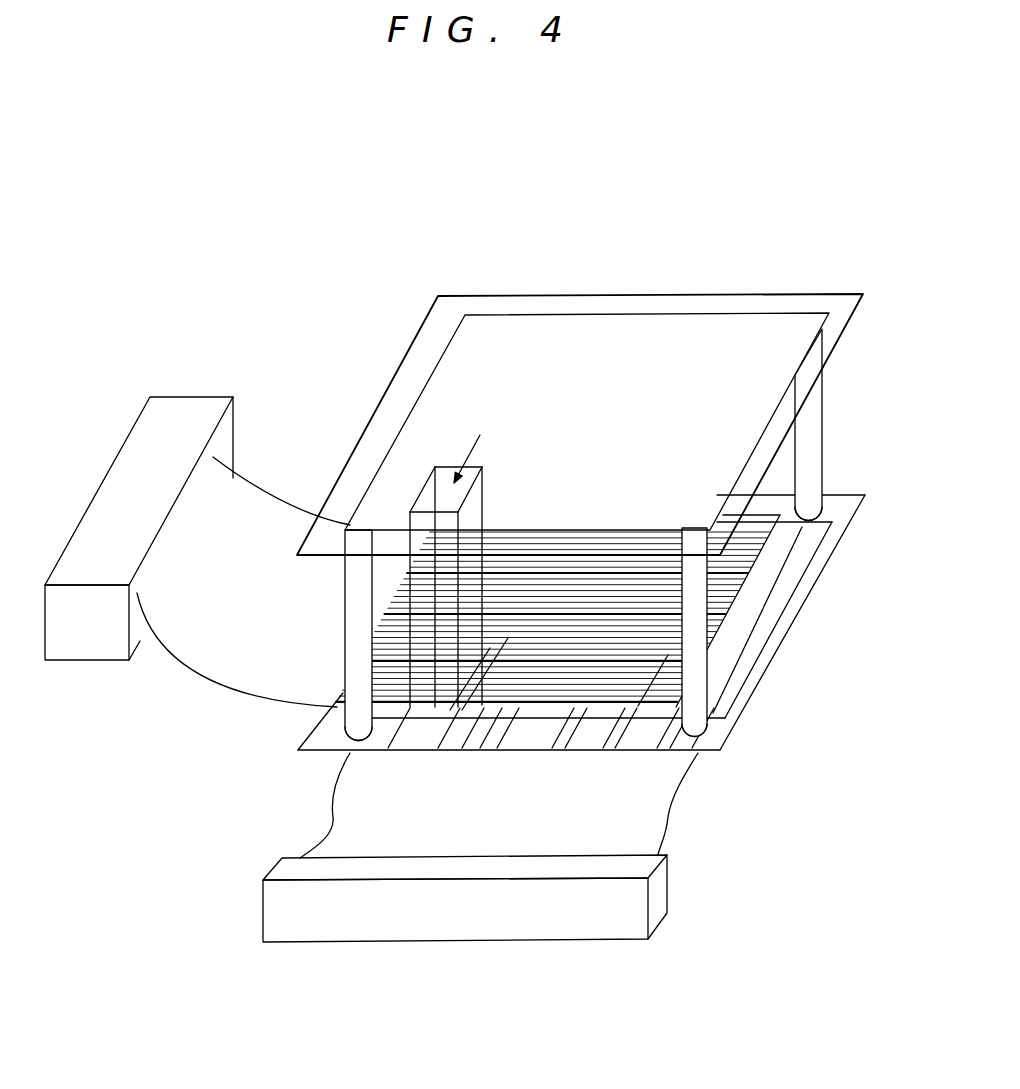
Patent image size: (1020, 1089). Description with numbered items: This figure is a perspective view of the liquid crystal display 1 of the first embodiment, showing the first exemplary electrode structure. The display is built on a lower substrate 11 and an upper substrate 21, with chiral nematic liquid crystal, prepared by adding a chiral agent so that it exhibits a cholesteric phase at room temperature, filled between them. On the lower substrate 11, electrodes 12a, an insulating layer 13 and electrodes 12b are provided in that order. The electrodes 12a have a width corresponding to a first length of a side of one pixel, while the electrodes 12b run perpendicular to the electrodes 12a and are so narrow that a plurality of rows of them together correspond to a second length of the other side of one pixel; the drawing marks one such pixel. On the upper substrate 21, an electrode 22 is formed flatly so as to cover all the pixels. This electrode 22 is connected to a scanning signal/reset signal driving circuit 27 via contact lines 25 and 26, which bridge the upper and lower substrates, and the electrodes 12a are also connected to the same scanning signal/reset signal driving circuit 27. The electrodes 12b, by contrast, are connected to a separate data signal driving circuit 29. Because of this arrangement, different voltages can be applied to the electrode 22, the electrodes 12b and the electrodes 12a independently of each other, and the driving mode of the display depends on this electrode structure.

The liquid crystal display 1 is at (576, 510).
The lower substrate 11 is at (758, 692).
The electrodes 12a is at (571, 737).
The electrodes 12b is at (511, 692).
The insulating layer 13 is at (760, 660).
The upper substrate 21 is at (715, 292).
The electrode 22 is at (600, 353).
The contact line 25 is at (822, 410).
The contact line 26 is at (762, 608).
The scanning signal/reset signal driving circuit 27 is at (467, 925).
The data signal driving circuit 29 is at (203, 393).